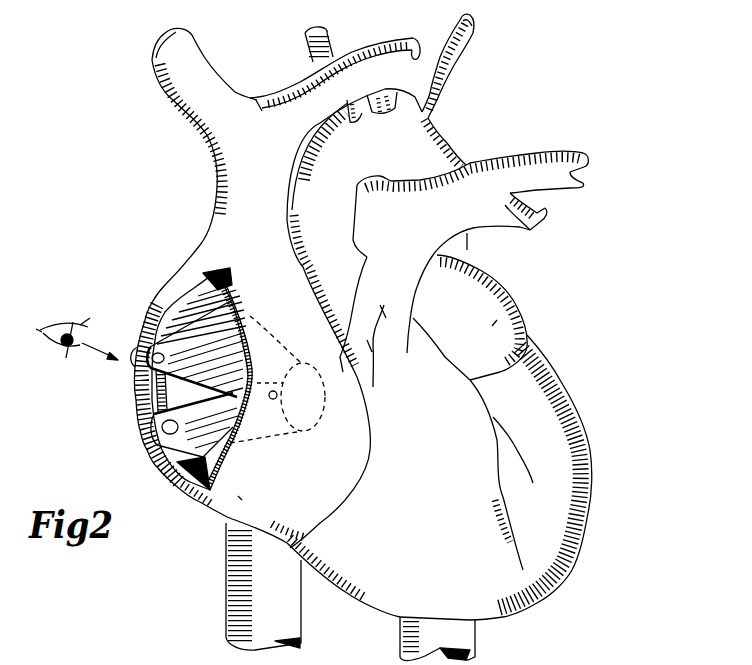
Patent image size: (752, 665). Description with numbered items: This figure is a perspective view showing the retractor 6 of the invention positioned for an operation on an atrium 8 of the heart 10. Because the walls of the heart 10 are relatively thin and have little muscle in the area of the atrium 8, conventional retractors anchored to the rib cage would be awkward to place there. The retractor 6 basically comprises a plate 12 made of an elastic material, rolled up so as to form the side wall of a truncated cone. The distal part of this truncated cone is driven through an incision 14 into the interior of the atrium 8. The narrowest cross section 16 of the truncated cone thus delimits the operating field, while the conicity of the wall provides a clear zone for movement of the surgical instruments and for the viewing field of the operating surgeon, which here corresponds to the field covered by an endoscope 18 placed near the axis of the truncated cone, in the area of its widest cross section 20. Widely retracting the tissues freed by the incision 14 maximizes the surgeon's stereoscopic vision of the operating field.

The retractor 6 is at (169, 266).
The atrium 8 is at (497, 320).
The heart 10 is at (617, 407).
The plate 12 is at (138, 363).
The incision 14 is at (229, 267).
The narrowest cross section 16 is at (320, 430).
The endoscope 18 is at (55, 307).
The widest cross section 20 is at (147, 415).